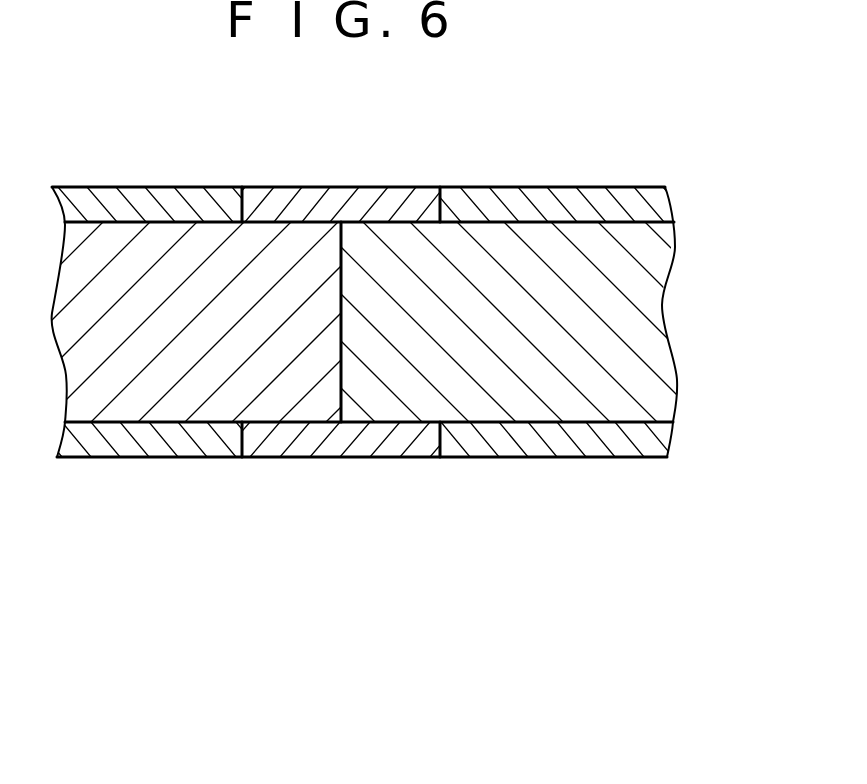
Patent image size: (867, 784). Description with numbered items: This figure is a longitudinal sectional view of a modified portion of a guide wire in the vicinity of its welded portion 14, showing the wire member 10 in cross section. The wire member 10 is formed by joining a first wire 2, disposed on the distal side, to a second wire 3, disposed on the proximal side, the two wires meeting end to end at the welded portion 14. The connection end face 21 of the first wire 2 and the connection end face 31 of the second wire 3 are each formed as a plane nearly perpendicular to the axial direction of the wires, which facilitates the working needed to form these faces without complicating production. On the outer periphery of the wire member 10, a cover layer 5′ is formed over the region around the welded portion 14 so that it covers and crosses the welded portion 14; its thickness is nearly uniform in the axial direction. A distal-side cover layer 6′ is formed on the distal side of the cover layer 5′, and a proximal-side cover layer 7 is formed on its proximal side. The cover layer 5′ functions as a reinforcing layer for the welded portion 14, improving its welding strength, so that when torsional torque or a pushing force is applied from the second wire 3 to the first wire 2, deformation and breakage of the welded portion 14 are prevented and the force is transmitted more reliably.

The wire member 10 is at (681, 311).
The first wire 2 is at (139, 395).
The second wire 3 is at (582, 405).
The welded portion 14 is at (343, 415).
The connection end face 21 is at (343, 253).
The connection end face 31 is at (340, 367).
The distal-side cover layer 6′ is at (163, 189).
The cover layer 5′ is at (281, 189).
The proximal-side cover layer 7 is at (571, 197).